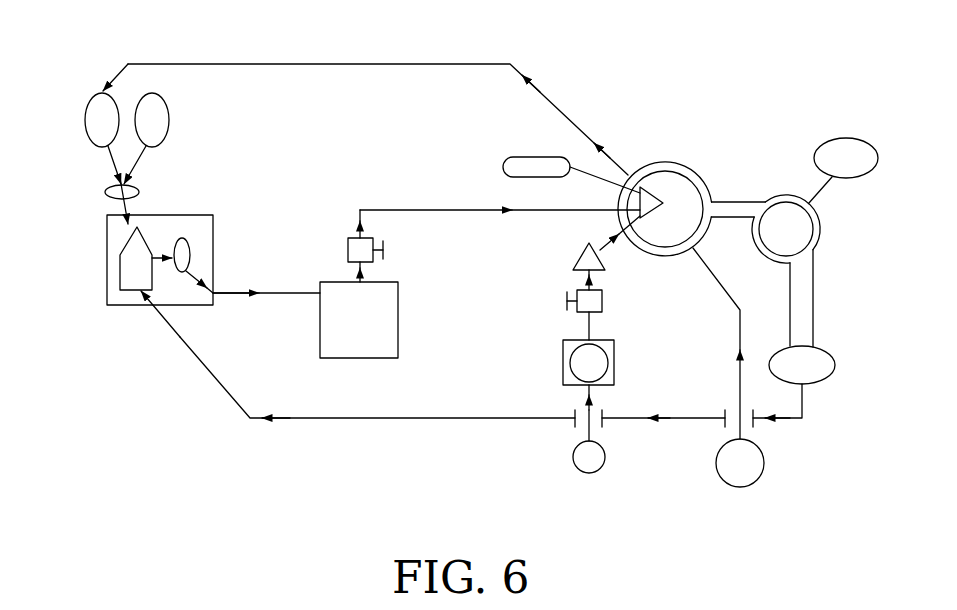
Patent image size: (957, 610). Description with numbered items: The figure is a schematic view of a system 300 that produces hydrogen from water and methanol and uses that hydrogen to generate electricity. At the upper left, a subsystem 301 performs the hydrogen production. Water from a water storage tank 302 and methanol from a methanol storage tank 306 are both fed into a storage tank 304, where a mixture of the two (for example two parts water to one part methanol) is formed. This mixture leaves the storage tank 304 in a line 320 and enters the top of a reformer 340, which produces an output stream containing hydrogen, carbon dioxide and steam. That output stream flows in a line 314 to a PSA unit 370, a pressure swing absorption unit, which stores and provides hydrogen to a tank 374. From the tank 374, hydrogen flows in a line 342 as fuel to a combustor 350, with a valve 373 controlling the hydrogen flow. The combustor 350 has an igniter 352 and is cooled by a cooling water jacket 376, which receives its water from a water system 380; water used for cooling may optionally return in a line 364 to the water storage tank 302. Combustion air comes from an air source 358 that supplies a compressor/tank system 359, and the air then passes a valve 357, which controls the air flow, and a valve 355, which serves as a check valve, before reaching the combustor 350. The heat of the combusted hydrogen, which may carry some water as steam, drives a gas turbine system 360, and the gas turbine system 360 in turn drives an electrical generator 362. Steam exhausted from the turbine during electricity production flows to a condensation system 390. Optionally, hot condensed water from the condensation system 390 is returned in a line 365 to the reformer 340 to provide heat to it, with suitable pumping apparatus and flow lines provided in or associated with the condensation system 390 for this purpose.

The system 300 is at (369, 178).
The subsystem 301 is at (106, 252).
The water storage tank 302 is at (93, 107).
The storage tank 304 is at (112, 192).
The methanol storage tank 306 is at (158, 103).
The line 314 is at (150, 307).
The line 320 is at (117, 203).
The reformer 340 is at (127, 284).
The line 342 is at (420, 210).
The combustor 350 is at (657, 188).
The igniter 352 is at (512, 160).
The valve 355 is at (575, 258).
The valve 357 is at (567, 301).
The air source 358 is at (587, 471).
The compressor/tank system 359 is at (563, 365).
The gas turbine system 360 is at (787, 196).
The electrical generator 362 is at (845, 146).
The line 364 is at (553, 103).
The line 365 is at (368, 421).
The PSA unit 370 is at (184, 271).
The valve 373 is at (348, 250).
The tank 374 is at (332, 355).
The cooling water jacket 376 is at (663, 257).
The water system 380 is at (740, 484).
The condensation system 390 is at (812, 379).